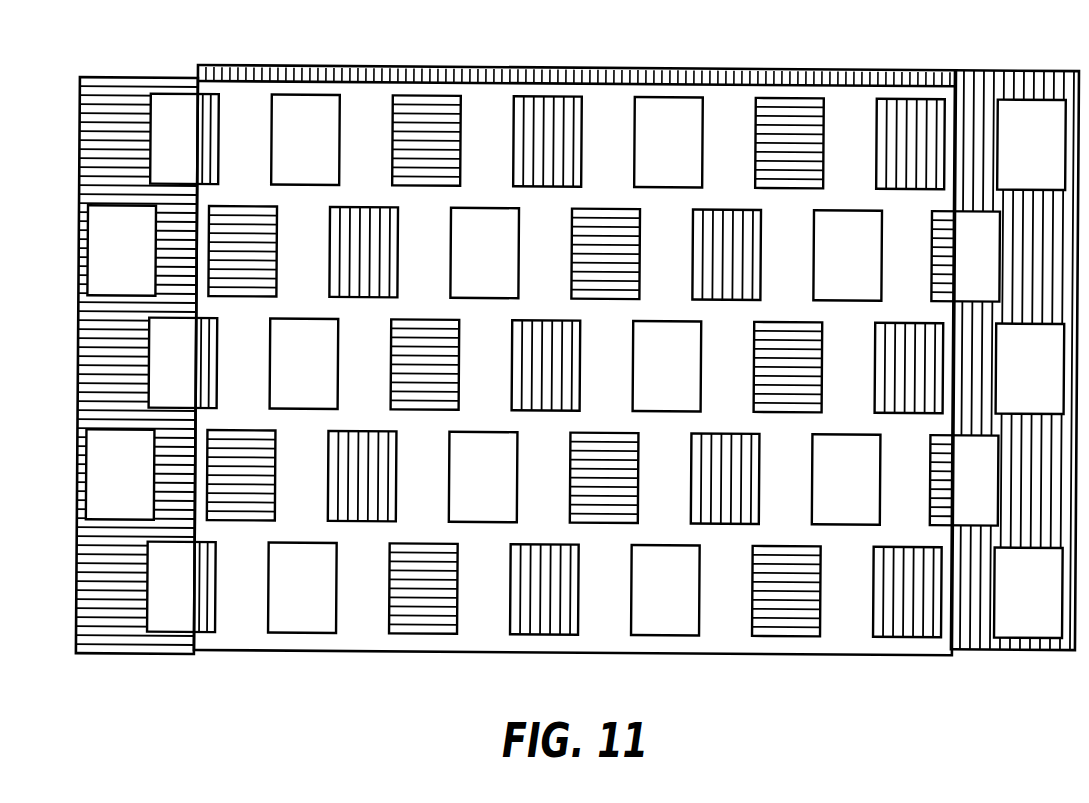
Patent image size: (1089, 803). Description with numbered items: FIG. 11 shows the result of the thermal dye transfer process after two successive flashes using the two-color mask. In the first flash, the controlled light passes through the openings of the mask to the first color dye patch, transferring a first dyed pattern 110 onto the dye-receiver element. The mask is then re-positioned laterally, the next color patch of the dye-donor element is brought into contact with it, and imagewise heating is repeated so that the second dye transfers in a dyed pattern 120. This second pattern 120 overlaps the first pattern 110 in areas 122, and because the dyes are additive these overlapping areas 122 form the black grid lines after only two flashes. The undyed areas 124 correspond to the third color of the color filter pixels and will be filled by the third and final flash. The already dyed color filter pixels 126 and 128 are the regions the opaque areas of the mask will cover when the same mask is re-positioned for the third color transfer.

The dyed pattern 110 is at (992, 88).
The dyed pattern 120 is at (127, 115).
The overlap areas 122 is at (368, 132).
The undyed areas 124 is at (670, 125).
The color filter pixels 126 is at (544, 110).
The color filter pixels 128 is at (798, 125).